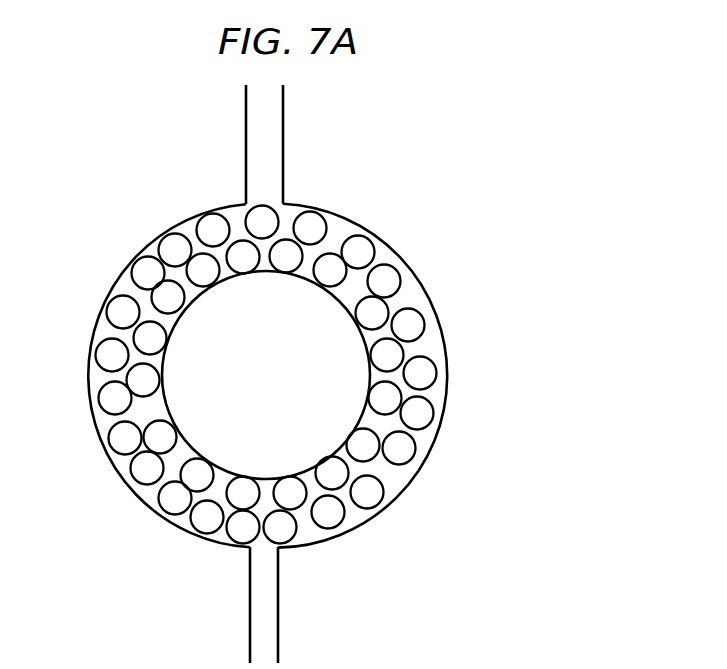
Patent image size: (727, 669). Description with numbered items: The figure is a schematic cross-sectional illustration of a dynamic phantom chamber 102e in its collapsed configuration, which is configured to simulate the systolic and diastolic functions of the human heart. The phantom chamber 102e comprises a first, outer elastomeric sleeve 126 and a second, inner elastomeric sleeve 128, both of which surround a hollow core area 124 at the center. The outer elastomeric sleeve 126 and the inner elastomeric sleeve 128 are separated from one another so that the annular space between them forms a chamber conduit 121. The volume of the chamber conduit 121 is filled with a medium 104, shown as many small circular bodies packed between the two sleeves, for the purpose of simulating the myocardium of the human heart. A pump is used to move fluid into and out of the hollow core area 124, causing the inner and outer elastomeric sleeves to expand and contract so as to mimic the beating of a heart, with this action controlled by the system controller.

The phantom chamber 102e is at (495, 288).
The first outer elastomeric sleeve 126 is at (387, 248).
The hollow core area 124 is at (202, 432).
The chamber conduit 121 is at (440, 400).
The medium 104 is at (370, 493).
The second inner elastomeric sleeve 128 is at (322, 495).